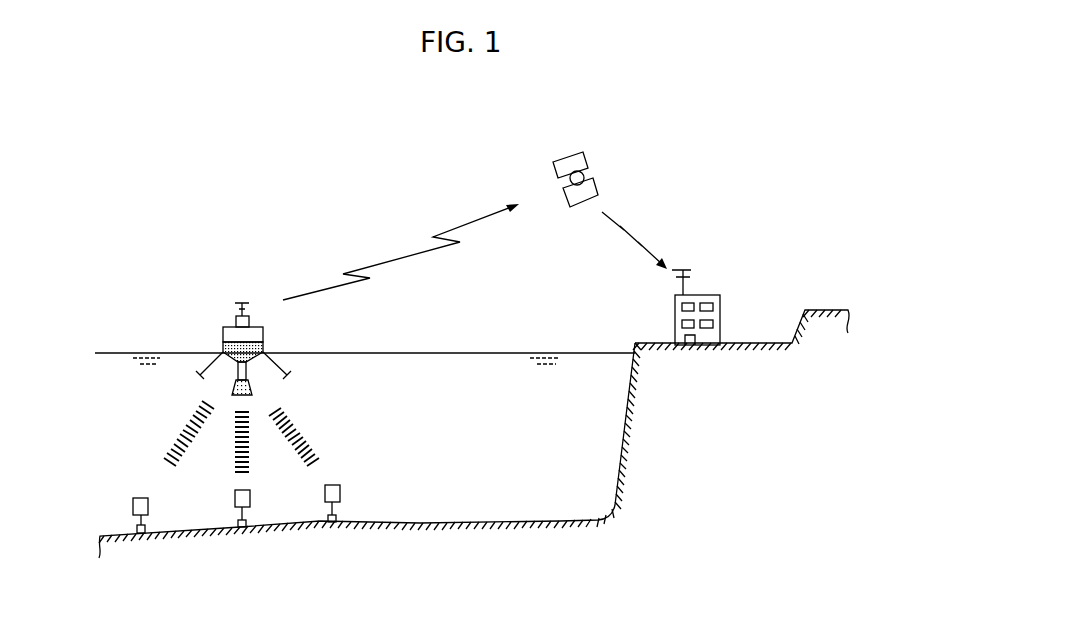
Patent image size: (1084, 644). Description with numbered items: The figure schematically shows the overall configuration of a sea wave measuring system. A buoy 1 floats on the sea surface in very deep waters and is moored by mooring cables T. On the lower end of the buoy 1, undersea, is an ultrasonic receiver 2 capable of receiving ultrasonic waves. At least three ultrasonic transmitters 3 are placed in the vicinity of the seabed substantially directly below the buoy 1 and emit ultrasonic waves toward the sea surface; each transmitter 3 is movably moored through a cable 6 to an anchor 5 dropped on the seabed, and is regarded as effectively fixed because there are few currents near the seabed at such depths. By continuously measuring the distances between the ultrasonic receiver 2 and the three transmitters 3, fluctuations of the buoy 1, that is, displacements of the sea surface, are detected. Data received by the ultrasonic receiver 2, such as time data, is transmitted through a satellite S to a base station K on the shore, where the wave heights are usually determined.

The buoy 1 is at (265, 331).
The ultrasonic receiver 2 is at (253, 387).
The ultrasonic transmitter 3 is at (134, 503).
The anchor 5 is at (150, 531).
The cable 6 is at (148, 526).
The satellite S is at (598, 157).
The base station K is at (718, 297).
The mooring cable T is at (200, 371).